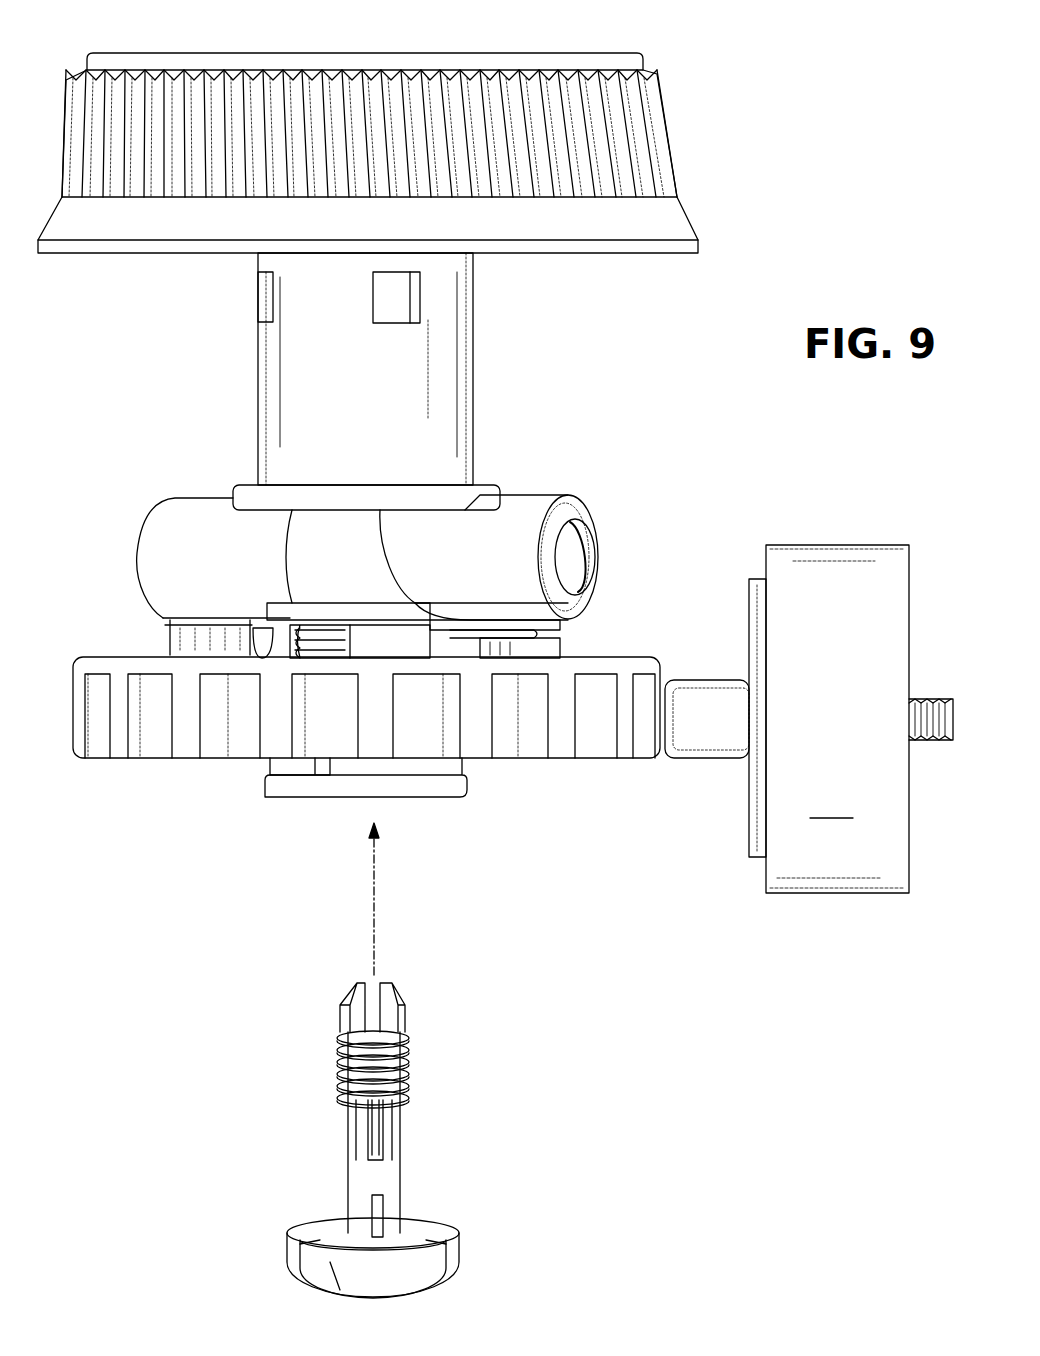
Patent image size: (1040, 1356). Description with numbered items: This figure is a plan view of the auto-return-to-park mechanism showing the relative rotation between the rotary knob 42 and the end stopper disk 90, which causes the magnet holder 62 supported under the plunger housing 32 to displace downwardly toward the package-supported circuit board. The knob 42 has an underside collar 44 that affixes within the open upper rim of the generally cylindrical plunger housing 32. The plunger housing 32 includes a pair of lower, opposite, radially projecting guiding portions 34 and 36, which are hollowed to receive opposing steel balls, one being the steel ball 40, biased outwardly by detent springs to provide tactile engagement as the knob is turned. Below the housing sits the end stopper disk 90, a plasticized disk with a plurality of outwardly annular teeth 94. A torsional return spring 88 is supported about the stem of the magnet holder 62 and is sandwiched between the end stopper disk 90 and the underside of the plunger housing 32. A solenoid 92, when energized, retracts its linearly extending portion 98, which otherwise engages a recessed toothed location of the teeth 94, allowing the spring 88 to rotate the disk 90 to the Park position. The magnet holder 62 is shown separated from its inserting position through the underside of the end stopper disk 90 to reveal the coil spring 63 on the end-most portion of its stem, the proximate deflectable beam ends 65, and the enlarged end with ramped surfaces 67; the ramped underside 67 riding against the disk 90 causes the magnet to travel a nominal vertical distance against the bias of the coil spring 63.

The rotary knob 42 is at (73, 132).
The underside collar 44 is at (297, 383).
The radial projecting guiding portion 34 is at (195, 525).
The radial projecting guiding portion 36 is at (545, 520).
The plunger housing 32 is at (330, 553).
The steel ball 40 is at (582, 553).
The teeth 94 is at (243, 738).
The end stopper disk 90 is at (276, 780).
The torsional return spring 88 is at (318, 645).
The linearly extending portion 98 is at (716, 732).
The solenoid 92 is at (845, 893).
The deflectable beam ends 65 is at (362, 982).
The coil spring 63 is at (405, 1065).
The magnet holder 62 is at (381, 1092).
The ramped surfaces 67 is at (412, 1252).